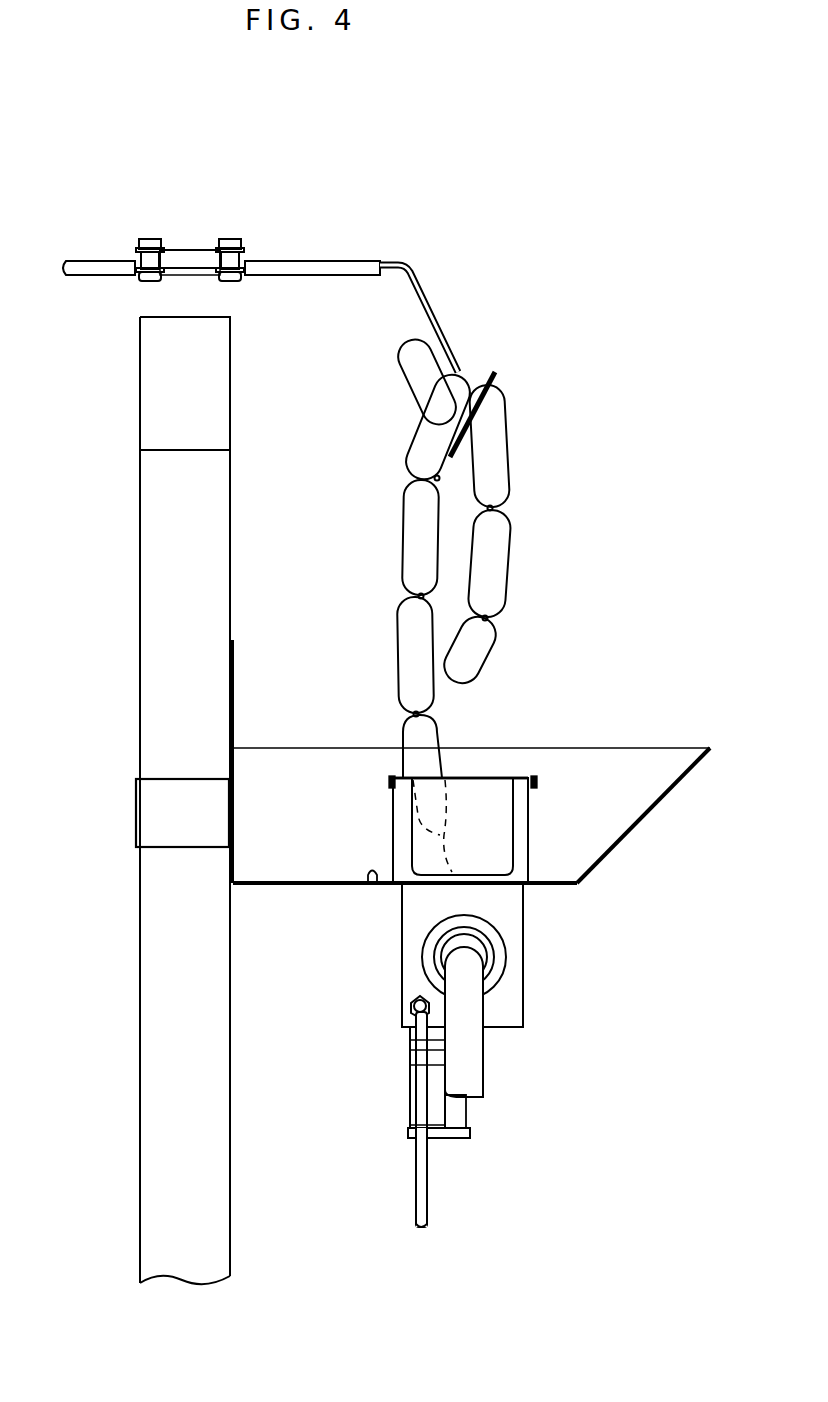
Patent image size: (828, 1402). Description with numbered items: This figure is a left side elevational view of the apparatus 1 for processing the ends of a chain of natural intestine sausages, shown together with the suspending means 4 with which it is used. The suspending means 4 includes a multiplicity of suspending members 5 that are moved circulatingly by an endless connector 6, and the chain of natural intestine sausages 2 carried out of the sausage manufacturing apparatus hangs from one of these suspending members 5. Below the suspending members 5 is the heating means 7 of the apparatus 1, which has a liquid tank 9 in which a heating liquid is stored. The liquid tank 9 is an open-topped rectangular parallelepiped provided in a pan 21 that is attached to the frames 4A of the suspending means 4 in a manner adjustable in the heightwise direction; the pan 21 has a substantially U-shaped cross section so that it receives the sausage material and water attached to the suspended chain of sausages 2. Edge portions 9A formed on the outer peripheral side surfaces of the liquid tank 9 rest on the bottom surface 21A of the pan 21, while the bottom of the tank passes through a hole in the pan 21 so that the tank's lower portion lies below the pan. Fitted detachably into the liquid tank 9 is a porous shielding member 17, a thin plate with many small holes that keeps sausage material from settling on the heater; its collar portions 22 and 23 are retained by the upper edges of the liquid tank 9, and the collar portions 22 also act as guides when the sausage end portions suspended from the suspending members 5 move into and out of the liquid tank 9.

The apparatus for processing ends of a chain of natural intestine sausages 1 is at (388, 1143).
The chain of natural intestine sausages 2 is at (512, 510).
The suspending means 4 is at (327, 222).
The frames 4A is at (190, 665).
The suspending members 5 is at (404, 262).
The endless connector 6 is at (230, 242).
The heating means 7 is at (500, 1048).
The liquid tank 9 is at (524, 1013).
The edge portions 9A is at (365, 885).
The porous shielding member 17 is at (519, 774).
The pan 21 is at (332, 885).
The bottom surface 21A is at (275, 883).
The collar portions 22 is at (503, 818).
The collar portions 23 is at (390, 782).